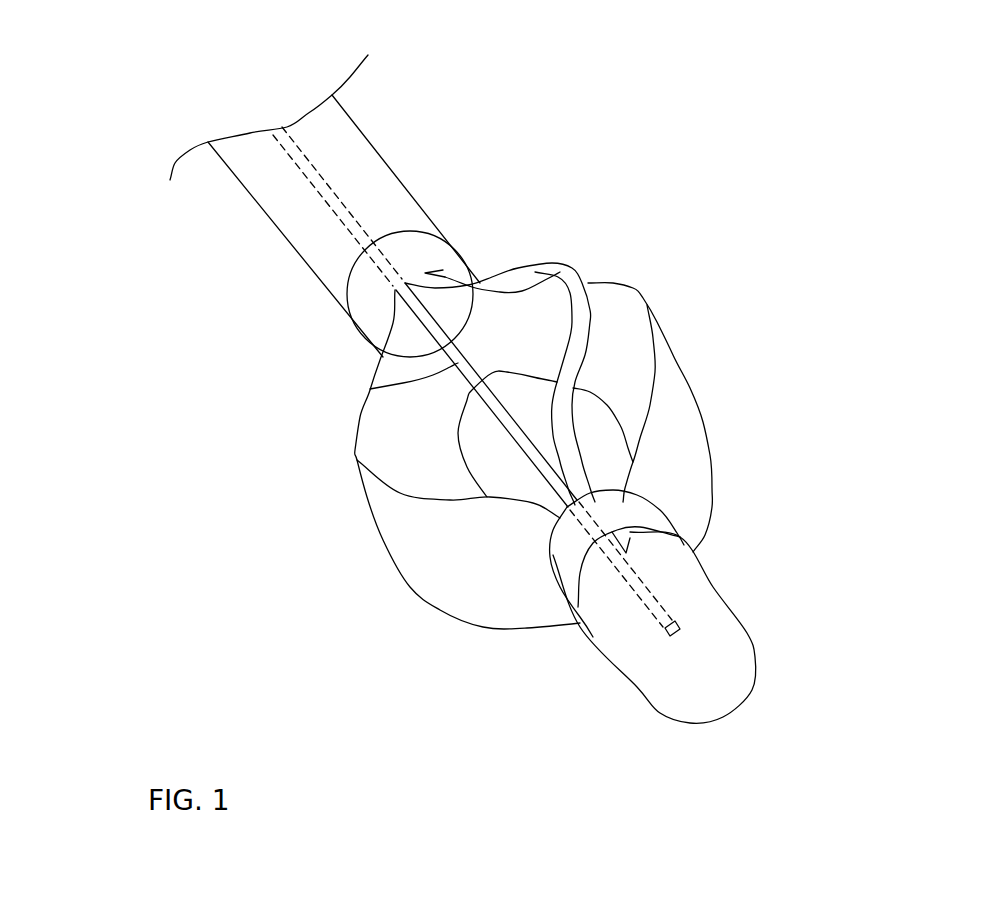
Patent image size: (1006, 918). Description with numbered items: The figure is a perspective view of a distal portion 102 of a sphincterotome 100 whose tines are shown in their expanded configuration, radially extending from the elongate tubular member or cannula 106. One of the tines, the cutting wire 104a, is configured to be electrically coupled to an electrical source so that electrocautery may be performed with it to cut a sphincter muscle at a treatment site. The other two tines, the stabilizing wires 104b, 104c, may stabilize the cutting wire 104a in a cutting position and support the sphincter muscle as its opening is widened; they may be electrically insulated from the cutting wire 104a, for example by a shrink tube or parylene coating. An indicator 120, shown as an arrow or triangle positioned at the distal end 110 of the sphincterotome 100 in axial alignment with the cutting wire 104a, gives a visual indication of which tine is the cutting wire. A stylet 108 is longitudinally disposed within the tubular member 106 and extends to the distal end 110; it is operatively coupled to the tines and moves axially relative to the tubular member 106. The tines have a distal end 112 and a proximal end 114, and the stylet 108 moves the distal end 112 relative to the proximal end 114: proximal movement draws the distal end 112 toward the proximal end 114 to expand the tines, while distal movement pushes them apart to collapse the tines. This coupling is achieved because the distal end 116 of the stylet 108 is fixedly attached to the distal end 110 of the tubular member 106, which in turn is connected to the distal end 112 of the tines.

The sphincterotome 100 is at (908, 117).
The distal portion 102 is at (338, 142).
The cutting wire 104a is at (571, 278).
The stabilizing wire 104b is at (433, 553).
The stabilizing wire 104c is at (670, 397).
The elongate tubular member 106 is at (285, 212).
The stylet 108 is at (370, 389).
The distal end 110 is at (697, 598).
The distal end of the tines 112 is at (630, 508).
The proximal end of the tines 114 is at (408, 250).
The distal end of the stylet 116 is at (667, 628).
The indicator 120 is at (627, 538).